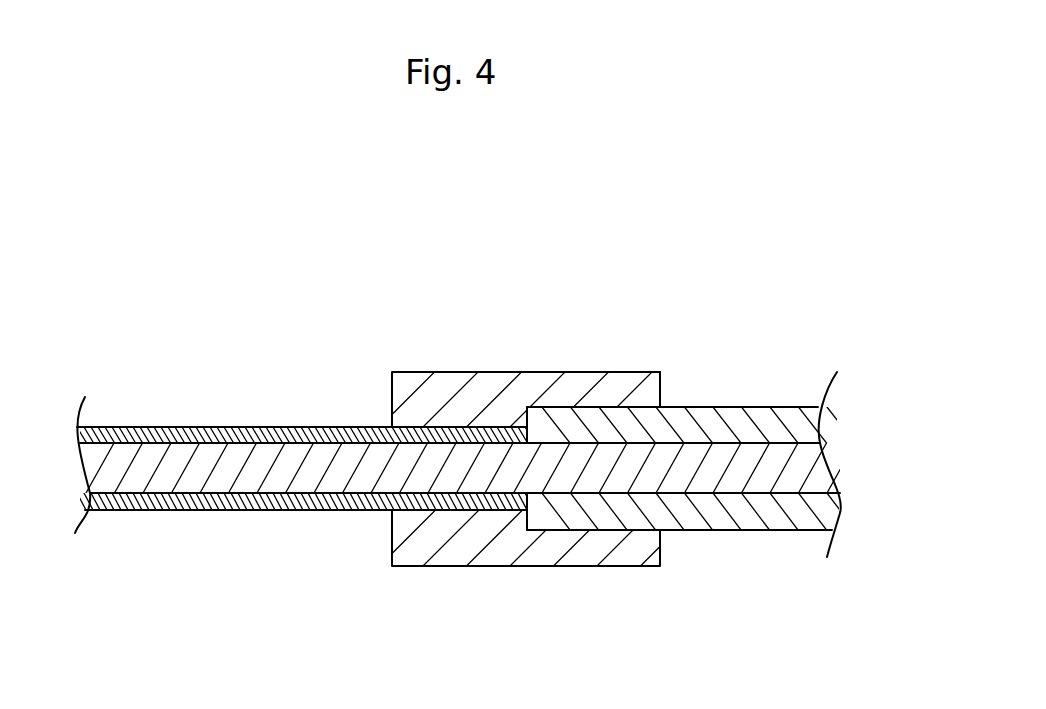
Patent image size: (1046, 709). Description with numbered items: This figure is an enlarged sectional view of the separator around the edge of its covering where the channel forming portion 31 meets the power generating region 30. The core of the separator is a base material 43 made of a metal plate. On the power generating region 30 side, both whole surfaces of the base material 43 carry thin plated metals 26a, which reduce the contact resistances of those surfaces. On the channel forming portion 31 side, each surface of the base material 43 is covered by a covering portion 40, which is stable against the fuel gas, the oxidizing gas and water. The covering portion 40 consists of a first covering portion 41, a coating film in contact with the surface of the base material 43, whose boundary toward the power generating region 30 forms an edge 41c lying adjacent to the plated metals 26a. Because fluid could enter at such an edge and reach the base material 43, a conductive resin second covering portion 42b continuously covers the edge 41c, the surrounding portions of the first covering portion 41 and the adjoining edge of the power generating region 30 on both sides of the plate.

The plated metal 26a is at (143, 426).
The power generating region 30 is at (282, 426).
The channel forming portion 31 is at (790, 405).
The covering portion 40 is at (612, 350).
The first covering portion 41 is at (712, 423).
The edge 41c is at (528, 421).
The second covering portion 42b is at (454, 380).
The base material 43 is at (228, 462).